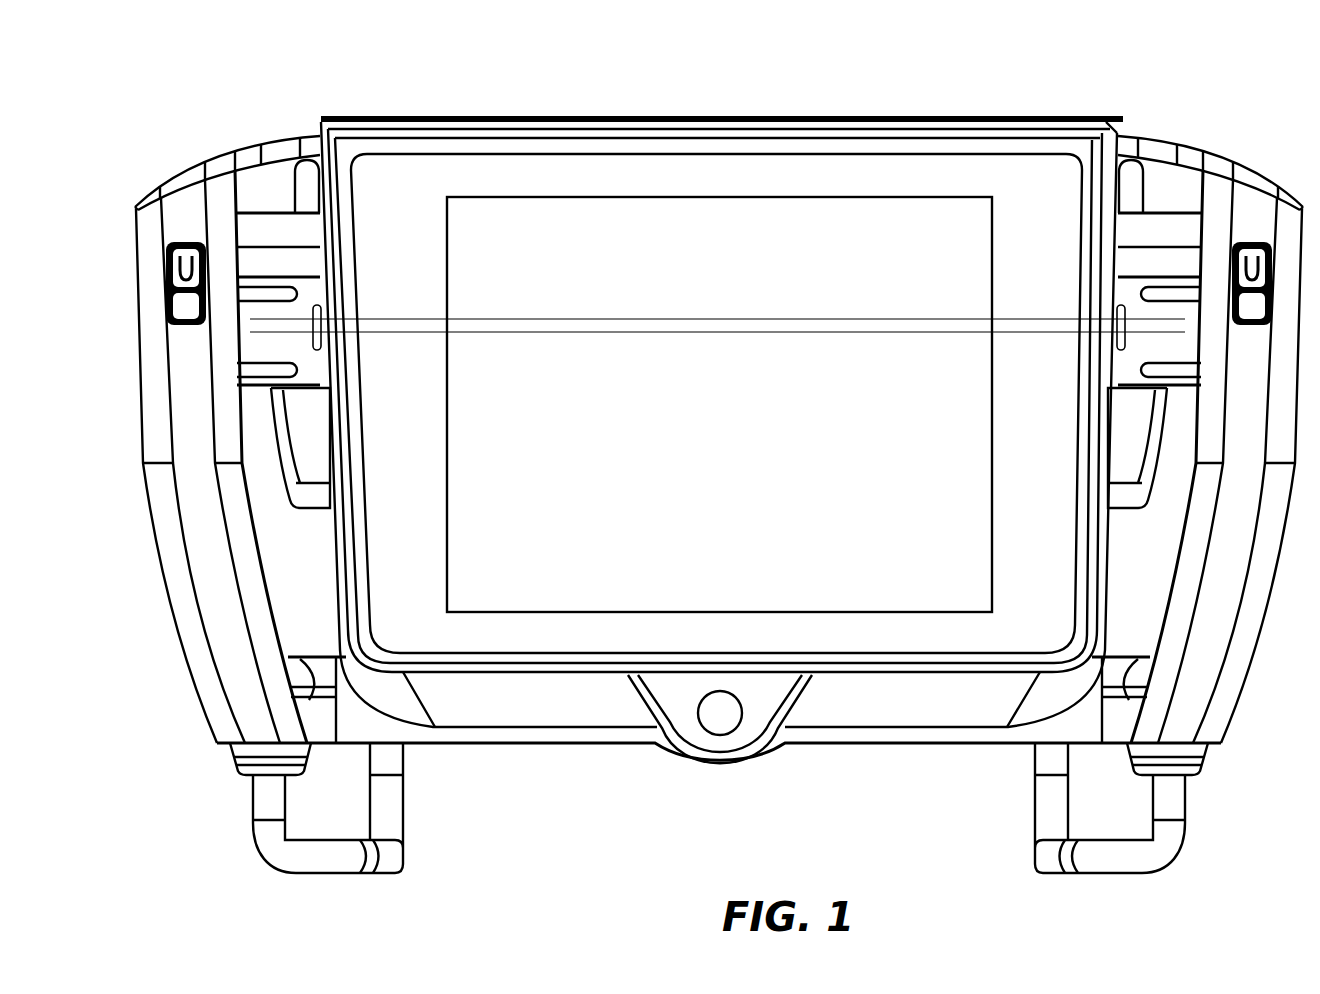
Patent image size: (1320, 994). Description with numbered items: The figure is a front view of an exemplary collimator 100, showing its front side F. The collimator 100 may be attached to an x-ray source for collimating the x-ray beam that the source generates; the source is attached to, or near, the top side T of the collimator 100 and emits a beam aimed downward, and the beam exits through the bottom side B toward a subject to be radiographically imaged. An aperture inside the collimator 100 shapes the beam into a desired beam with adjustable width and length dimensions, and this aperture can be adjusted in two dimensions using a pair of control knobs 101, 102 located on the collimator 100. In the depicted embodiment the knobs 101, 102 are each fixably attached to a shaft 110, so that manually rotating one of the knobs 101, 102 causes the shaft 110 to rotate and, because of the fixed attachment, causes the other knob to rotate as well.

The collimator 100 is at (564, 80).
The control knob 101 is at (268, 276).
The control knob 102 is at (1163, 268).
The shaft 110 is at (776, 308).
The top side T is at (840, 90).
The front side F is at (400, 220).
The bottom side B is at (831, 804).